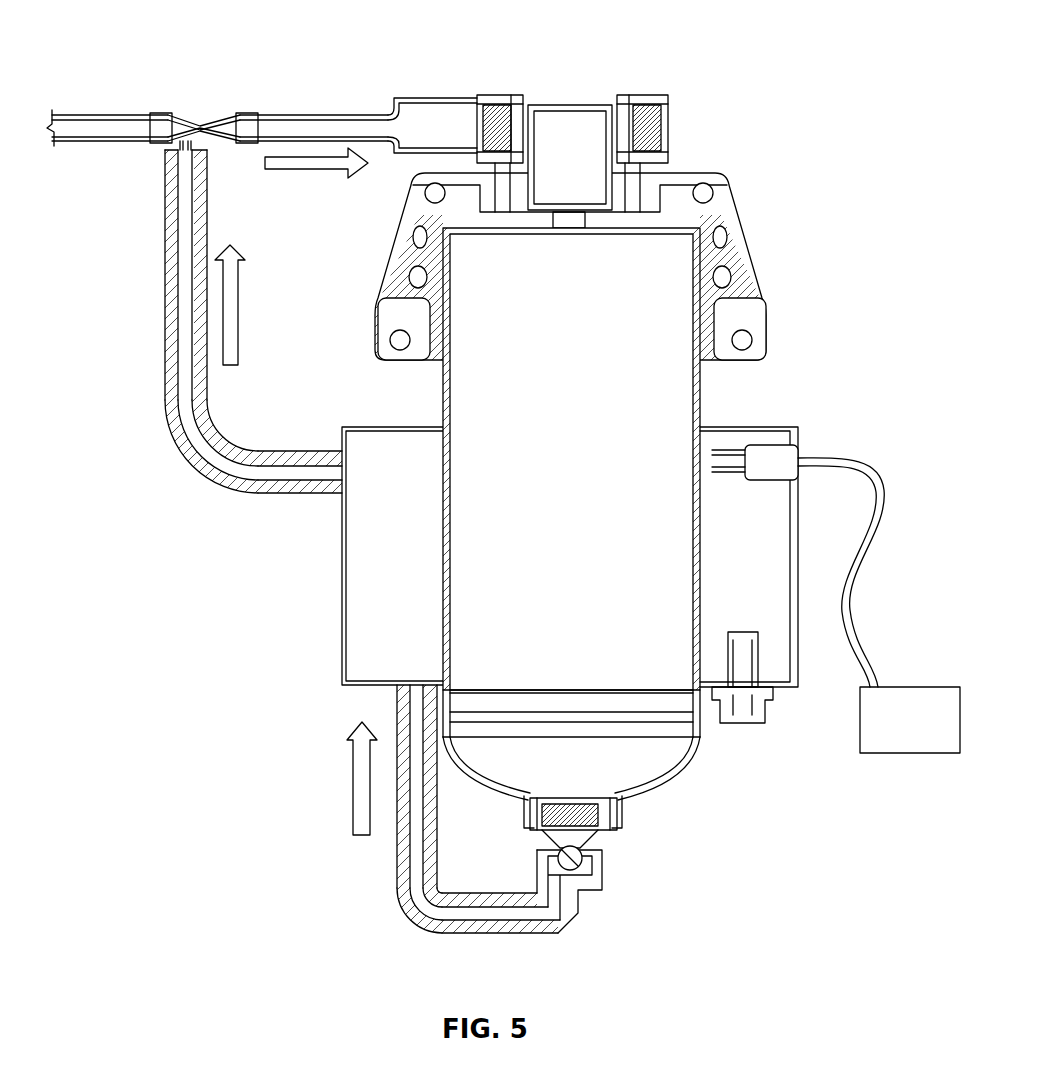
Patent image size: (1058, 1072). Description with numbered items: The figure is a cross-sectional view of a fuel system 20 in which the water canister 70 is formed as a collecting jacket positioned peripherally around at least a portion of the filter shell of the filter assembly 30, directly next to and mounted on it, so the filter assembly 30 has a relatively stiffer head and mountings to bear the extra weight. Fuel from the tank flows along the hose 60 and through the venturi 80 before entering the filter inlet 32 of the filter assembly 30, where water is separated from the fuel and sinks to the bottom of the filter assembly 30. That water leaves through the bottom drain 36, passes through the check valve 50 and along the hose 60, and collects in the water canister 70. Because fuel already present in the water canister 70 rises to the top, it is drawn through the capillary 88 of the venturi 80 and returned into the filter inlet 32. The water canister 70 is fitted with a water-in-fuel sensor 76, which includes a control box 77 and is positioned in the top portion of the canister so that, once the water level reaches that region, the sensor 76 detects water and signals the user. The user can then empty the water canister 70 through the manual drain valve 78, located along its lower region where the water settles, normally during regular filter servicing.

The fuel system 20 is at (770, 88).
The filter assembly 30 is at (708, 400).
The filter inlet 32 is at (486, 95).
The bottom drain 36 is at (645, 95).
The check valve 50 is at (606, 848).
The hose 60 is at (90, 113).
The water canister 70 is at (342, 585).
The water-in-fuel sensor 76 is at (775, 445).
The control box 77 is at (895, 753).
The drain valve 78 is at (767, 700).
The venturi 80 is at (210, 110).
The capillary 88 is at (175, 147).